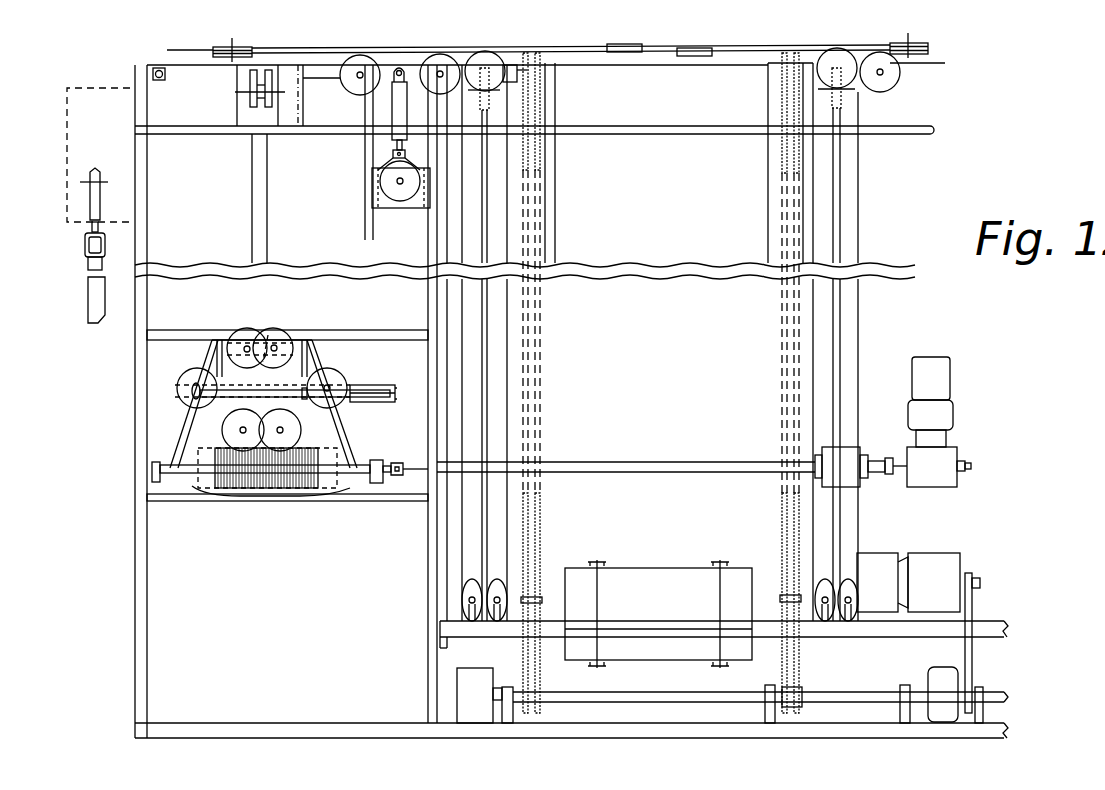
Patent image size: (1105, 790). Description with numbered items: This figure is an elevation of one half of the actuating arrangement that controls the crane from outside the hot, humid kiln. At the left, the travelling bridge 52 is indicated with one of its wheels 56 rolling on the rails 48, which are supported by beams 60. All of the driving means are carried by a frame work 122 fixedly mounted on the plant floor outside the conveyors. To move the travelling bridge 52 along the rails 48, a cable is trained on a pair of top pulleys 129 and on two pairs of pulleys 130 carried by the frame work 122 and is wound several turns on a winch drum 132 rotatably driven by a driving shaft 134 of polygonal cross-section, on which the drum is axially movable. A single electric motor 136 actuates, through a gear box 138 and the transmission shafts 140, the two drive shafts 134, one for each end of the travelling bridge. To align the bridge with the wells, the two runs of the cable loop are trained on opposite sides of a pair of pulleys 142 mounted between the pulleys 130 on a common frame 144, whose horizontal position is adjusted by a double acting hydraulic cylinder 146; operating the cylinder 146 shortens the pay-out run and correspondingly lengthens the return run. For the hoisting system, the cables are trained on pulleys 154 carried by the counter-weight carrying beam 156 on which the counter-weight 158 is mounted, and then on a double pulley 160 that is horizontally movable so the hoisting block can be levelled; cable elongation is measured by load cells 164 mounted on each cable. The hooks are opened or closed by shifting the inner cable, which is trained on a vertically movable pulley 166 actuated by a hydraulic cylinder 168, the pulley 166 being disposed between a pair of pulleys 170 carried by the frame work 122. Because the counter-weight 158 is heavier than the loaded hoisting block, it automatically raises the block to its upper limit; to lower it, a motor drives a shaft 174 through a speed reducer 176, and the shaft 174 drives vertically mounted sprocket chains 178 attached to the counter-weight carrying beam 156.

The rails 48 is at (98, 230).
The travelling bridge 52 is at (108, 80).
The wheels 56 is at (100, 190).
The beams 60 is at (105, 245).
The frame work 122 is at (138, 630).
The top pulleys 129 is at (266, 108).
The pulleys 130 is at (248, 333).
The winch drum 132 is at (283, 482).
The driving shaft 134 is at (353, 475).
The electric motor 136 is at (938, 376).
The gear box 138 is at (950, 452).
The transmission shafts 140 is at (700, 462).
The pulleys 142 is at (192, 375).
The common frame 144 is at (372, 400).
The double acting hydraulic cylinder 146 is at (382, 388).
The pulleys 154 is at (495, 588).
The counter-weight carrying beam 156 is at (686, 635).
The counter-weight 158 is at (665, 576).
The double pulley 160 is at (224, 47).
The load cells 164 is at (688, 55).
The vertically movable pulley 166 is at (388, 181).
The hydraulic cylinder 168 is at (396, 106).
The pulleys 170 is at (430, 62).
The shaft 174 is at (860, 692).
The speed reducer 176 is at (955, 690).
The sprocket chains 178 is at (541, 153).